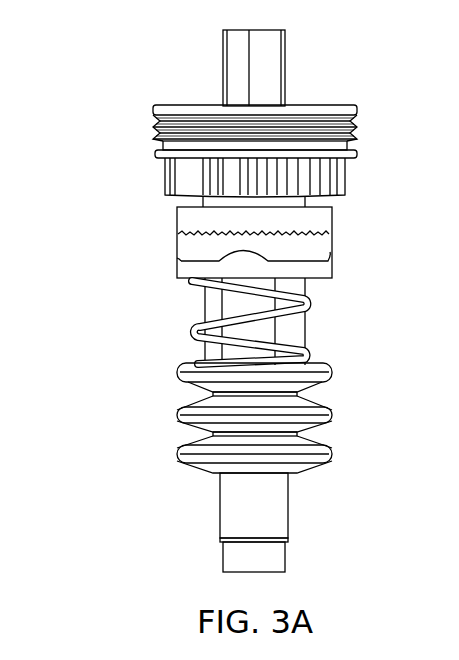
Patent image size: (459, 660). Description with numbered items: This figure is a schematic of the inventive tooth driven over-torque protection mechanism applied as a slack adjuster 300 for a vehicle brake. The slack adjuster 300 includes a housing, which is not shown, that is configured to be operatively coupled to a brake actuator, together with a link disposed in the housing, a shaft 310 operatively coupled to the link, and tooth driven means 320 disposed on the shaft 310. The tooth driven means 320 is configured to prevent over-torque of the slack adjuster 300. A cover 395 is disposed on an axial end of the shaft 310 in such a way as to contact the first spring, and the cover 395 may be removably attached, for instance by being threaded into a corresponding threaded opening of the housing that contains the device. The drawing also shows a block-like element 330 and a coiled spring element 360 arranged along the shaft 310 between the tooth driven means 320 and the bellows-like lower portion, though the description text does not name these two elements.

The slack adjuster 300 is at (146, 55).
The cover 395 is at (153, 127).
The tooth driven means 320 is at (178, 173).
The housing block 330 is at (163, 242).
The spring 360 is at (195, 323).
The shaft 310 is at (230, 523).